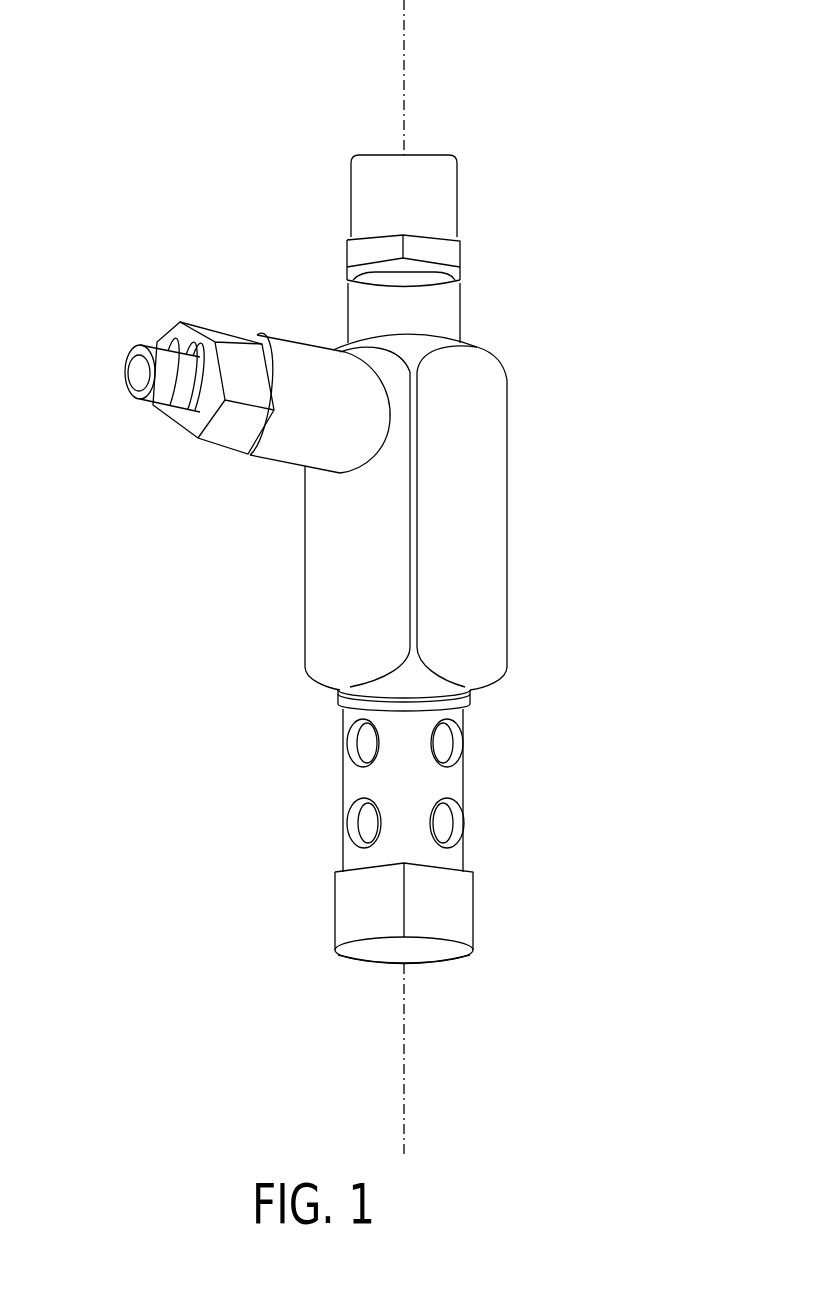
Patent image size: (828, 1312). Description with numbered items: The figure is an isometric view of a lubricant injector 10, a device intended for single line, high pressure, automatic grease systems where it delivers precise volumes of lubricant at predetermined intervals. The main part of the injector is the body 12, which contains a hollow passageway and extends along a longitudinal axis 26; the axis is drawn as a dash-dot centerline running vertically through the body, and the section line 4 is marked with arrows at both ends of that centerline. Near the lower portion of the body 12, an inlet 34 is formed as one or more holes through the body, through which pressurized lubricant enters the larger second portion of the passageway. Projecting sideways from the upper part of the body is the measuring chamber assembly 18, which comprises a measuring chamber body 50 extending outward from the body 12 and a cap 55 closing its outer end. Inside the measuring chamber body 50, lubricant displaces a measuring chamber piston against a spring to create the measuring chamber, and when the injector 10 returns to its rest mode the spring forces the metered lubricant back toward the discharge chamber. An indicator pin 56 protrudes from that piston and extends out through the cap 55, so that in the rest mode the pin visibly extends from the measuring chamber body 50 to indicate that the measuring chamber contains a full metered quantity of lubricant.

The section line 4 is at (406, 22).
The lubricant injector 10 is at (482, 172).
The body 12 is at (474, 622).
The measuring chamber assembly 18 is at (290, 340).
The longitudinal axis 26 is at (404, 577).
The inlet 34 is at (363, 743).
The measuring chamber body 50 is at (284, 388).
The cap 55 is at (232, 428).
The indicator pin 56 is at (142, 371).